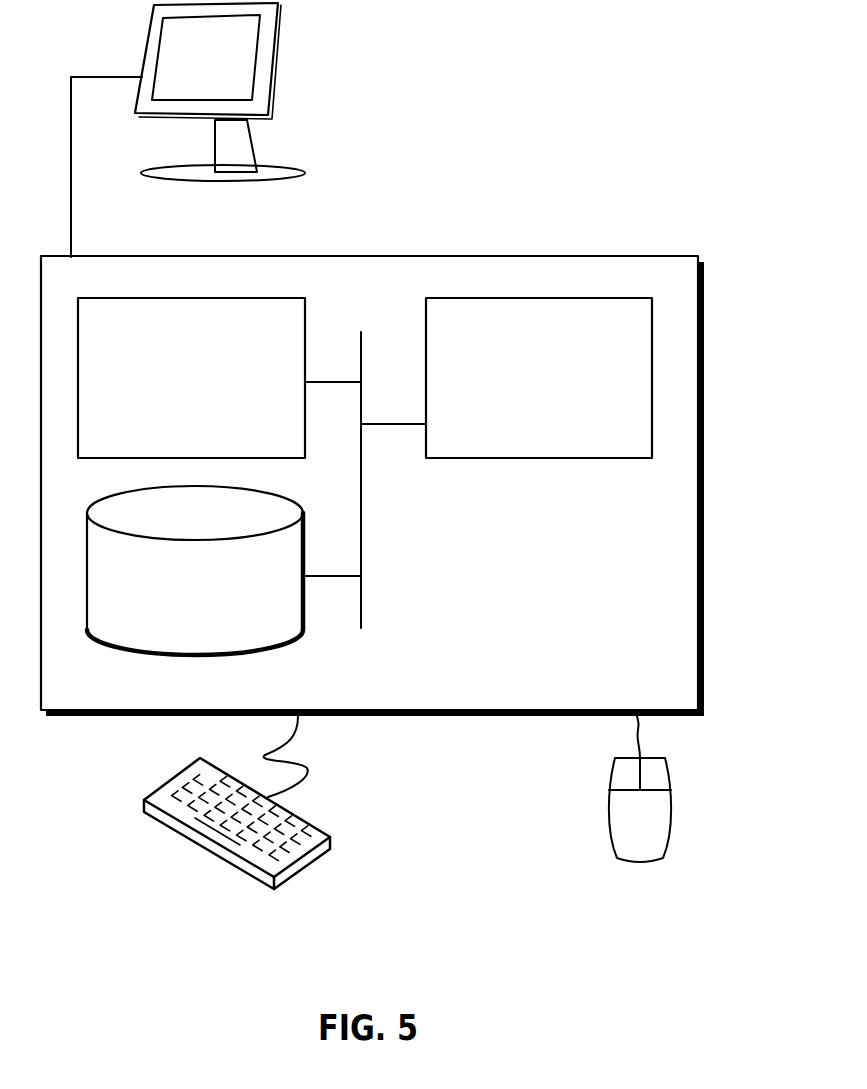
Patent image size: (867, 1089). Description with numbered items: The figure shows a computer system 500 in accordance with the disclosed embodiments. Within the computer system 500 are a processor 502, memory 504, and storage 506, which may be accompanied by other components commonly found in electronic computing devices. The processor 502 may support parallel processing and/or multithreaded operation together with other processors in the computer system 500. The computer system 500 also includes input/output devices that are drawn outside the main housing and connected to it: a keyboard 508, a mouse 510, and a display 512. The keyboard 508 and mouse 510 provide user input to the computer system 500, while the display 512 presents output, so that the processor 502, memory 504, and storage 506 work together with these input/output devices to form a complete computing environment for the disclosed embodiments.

The computer system 500 is at (415, 235).
The processor 502 is at (521, 389).
The memory 504 is at (171, 389).
The storage 506 is at (177, 601).
The keyboard 508 is at (163, 820).
The mouse 510 is at (620, 832).
The display 512 is at (188, 130).